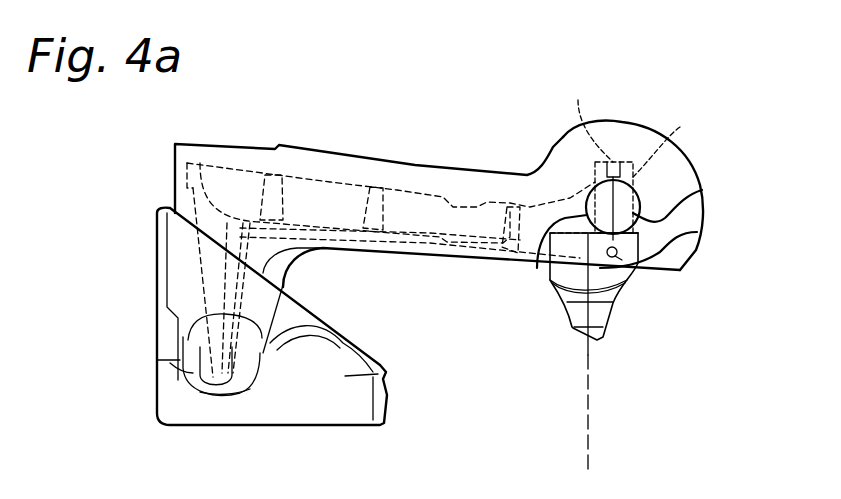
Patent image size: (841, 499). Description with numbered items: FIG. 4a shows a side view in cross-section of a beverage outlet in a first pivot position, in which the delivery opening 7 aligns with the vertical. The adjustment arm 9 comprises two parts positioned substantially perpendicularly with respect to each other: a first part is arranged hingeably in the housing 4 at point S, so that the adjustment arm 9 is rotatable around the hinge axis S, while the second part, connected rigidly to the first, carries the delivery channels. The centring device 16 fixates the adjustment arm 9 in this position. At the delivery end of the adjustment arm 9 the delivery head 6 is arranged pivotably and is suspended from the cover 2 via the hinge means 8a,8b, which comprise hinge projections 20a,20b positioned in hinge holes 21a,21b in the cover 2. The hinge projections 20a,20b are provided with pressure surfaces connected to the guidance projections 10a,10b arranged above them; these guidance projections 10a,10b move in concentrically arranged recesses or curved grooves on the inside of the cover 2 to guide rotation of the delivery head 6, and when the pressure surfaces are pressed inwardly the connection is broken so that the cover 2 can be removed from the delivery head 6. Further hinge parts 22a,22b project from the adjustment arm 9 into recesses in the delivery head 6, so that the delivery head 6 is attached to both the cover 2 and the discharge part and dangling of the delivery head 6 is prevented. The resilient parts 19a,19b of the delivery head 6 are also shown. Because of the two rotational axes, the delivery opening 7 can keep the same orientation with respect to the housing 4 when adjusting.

The adjustment arm 9 is at (326, 147).
The cover 2 is at (403, 210).
The delivery head 6 is at (653, 120).
The first and second resilient parts 19a,19b is at (680, 127).
The first and second guidance projections 10a,10b is at (578, 100).
The hinge means 8a,8b is at (703, 190).
The further hinge parts 22a,22b is at (697, 232).
The first and second hinge holes 21a,21b is at (572, 219).
The delivery opening 7 is at (597, 313).
The hinge projections 20a,20b is at (620, 213).
The housing 4 is at (380, 370).
The centring device 16 is at (173, 342).
The hinge axis S is at (157, 360).